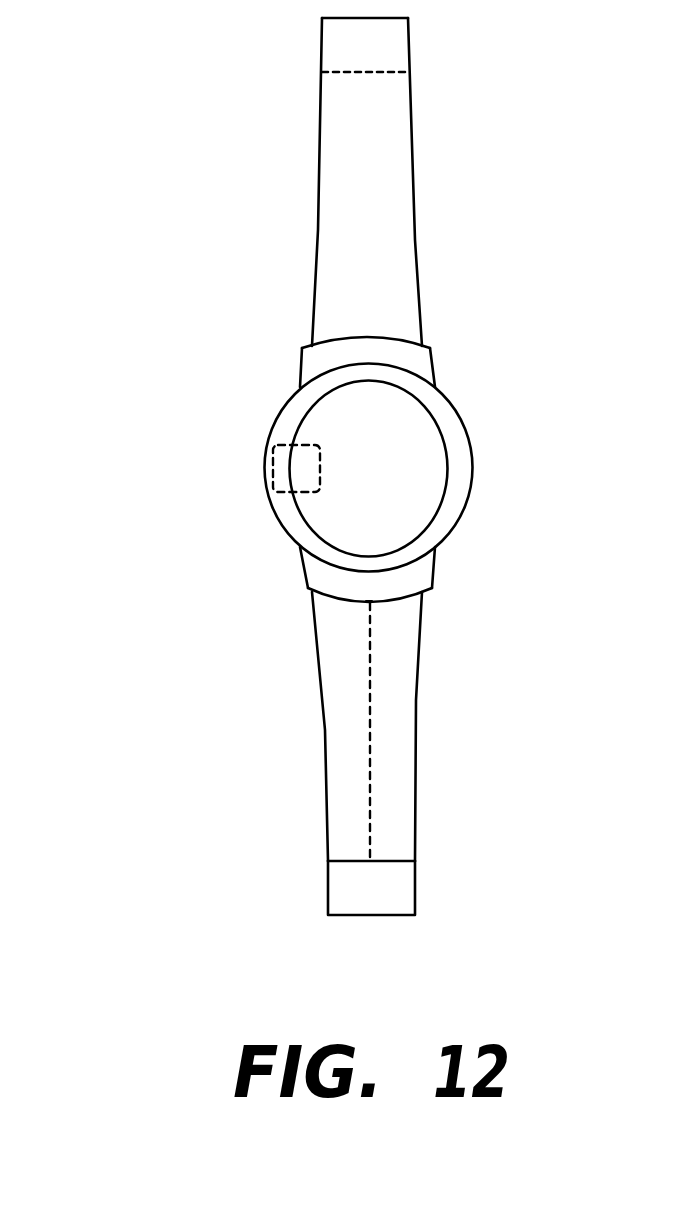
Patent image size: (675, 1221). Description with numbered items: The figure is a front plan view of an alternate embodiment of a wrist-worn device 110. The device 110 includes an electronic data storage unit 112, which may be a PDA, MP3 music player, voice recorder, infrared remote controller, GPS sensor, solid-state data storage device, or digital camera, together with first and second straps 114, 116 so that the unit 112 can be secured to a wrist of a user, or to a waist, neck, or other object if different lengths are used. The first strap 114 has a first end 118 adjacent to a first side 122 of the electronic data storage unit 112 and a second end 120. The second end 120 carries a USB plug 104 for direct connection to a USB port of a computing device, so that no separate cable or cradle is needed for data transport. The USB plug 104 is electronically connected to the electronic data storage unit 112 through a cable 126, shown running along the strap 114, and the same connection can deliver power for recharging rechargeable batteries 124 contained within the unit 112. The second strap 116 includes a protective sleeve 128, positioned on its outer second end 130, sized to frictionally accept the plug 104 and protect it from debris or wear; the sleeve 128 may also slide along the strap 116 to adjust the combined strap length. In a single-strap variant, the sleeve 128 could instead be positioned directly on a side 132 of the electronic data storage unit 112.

The USB plug 104 is at (335, 887).
The wrist-worn device 110 is at (202, 397).
The electronic data storage unit 112 is at (462, 443).
The first strap 114 is at (335, 733).
The second strap 116 is at (333, 200).
The first end 118 is at (368, 604).
The second end 120 is at (395, 861).
The first side 122 is at (435, 572).
The rechargeable batteries 124 is at (268, 477).
The cable 126 is at (358, 803).
The protective sleeve 128 is at (333, 42).
The second end 130 is at (342, 83).
The side 132 is at (367, 335).